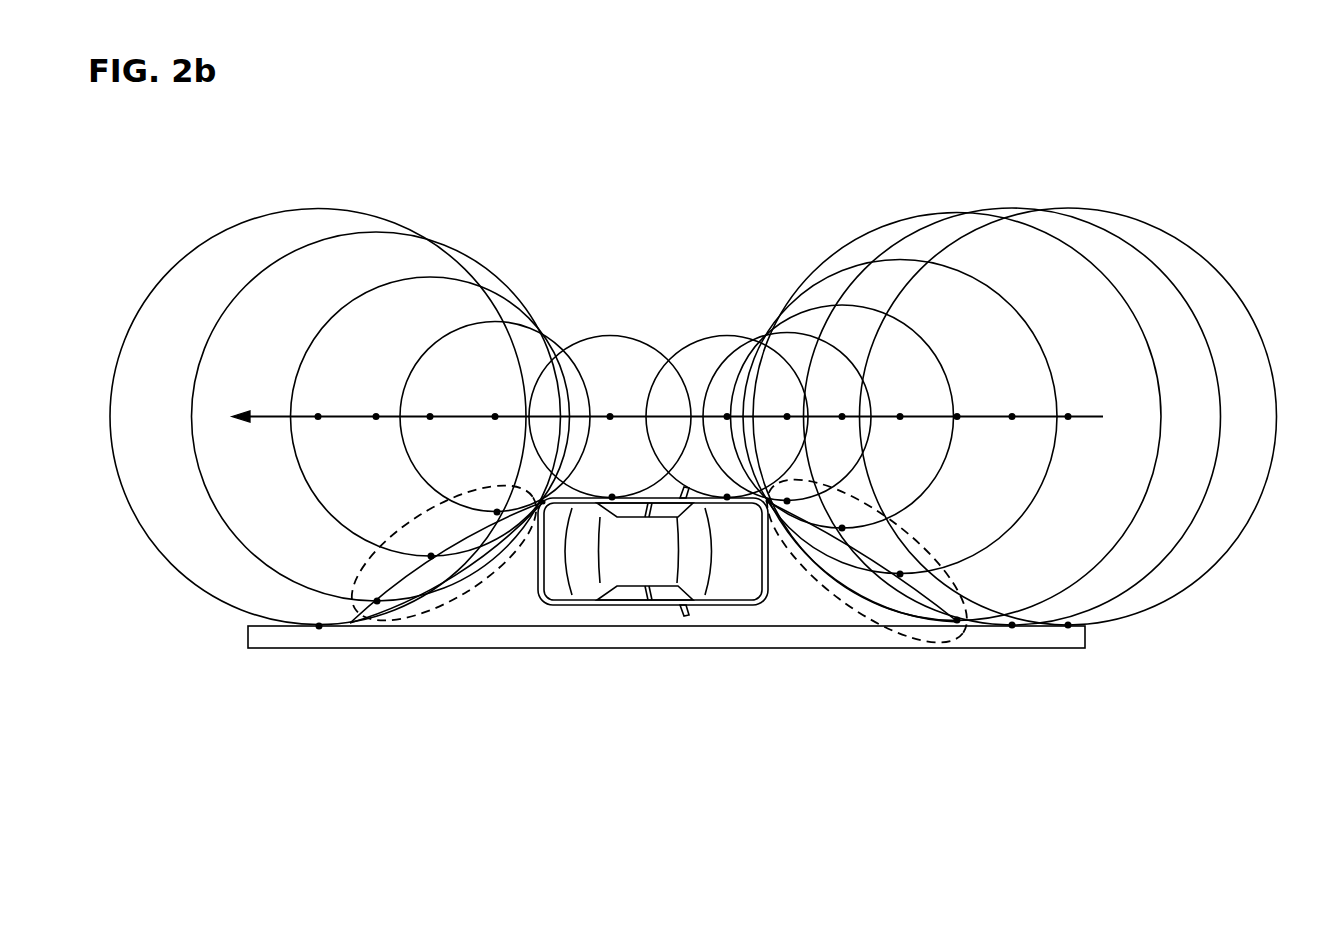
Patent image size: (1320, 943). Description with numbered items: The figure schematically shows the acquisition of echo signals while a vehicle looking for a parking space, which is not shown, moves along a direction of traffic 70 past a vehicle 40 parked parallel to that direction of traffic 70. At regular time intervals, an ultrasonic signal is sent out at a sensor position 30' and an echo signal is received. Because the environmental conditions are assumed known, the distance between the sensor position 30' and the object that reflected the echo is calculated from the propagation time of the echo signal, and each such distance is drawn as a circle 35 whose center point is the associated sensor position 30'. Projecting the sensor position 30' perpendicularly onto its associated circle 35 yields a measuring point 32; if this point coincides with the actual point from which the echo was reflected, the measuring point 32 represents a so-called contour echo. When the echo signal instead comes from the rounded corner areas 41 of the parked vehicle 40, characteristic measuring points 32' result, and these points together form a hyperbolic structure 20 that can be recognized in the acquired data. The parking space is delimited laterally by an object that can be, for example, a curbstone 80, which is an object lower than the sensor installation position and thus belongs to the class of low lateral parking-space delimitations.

The hyperbolic structure 20 is at (480, 599).
The sensor position 30' is at (717, 328).
The measuring point 32 is at (695, 670).
The characteristic measuring point 32' is at (661, 577).
The circle 35 is at (230, 228).
The vehicle 40 is at (642, 606).
The rounded corner area 41 is at (543, 506).
The direction of traffic 70 is at (266, 414).
The curbstone 80 is at (862, 636).